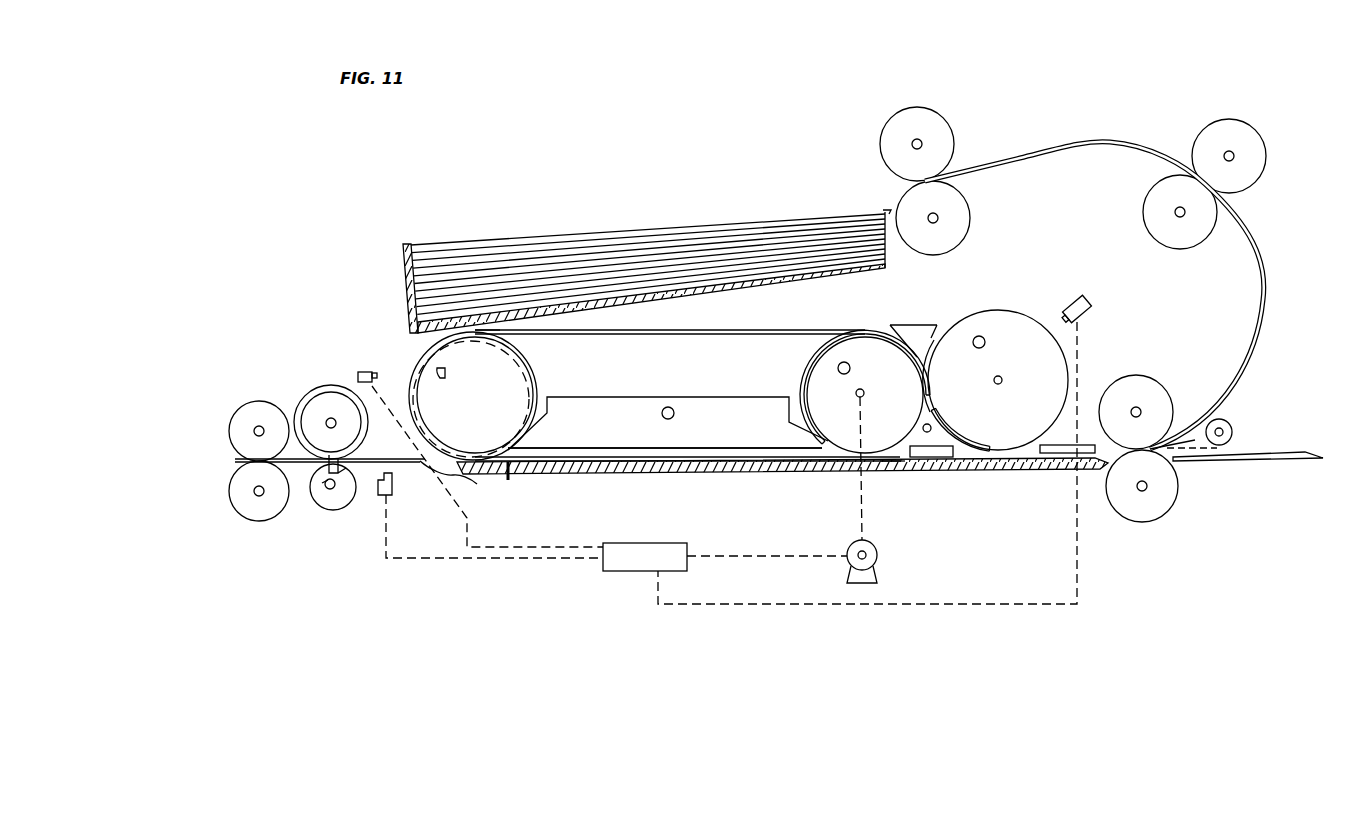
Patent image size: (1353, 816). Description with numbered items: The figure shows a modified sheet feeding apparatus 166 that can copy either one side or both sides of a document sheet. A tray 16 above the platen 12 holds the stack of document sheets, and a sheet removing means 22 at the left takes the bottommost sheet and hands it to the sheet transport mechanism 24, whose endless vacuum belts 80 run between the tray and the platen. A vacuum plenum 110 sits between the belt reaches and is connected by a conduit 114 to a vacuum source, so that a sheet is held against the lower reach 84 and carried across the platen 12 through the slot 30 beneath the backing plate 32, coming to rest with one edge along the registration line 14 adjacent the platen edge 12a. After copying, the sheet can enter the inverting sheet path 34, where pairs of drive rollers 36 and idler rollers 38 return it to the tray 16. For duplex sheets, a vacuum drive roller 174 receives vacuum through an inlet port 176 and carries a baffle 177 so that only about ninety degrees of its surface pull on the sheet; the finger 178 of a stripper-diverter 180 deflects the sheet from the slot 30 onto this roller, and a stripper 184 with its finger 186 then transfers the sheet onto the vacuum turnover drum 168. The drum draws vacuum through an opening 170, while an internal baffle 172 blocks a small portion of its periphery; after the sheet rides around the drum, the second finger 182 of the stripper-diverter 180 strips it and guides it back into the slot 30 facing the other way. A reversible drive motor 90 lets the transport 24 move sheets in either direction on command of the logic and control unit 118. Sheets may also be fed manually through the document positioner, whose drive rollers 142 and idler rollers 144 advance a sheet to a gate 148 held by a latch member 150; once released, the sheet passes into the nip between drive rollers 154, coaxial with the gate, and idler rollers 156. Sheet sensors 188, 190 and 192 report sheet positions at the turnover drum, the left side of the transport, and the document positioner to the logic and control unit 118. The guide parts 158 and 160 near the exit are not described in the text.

The platen 12 is at (700, 471).
The edge of the platen 12a is at (470, 485).
The registration line 14 is at (512, 470).
The tray 16 is at (410, 290).
The sheet removing means 22 is at (506, 331).
The sheet transport mechanism 24 is at (713, 330).
The slot 30 is at (642, 470).
The backing plate 32 is at (1090, 440).
The inverting sheet path 34 is at (1100, 147).
The drive rollers 36 is at (960, 216).
The idler rollers 38 is at (940, 125).
The vacuum belts 80 is at (630, 336).
The lower reach 84 is at (608, 456).
The reversible drive motor 90 is at (877, 553).
The vacuum plenum 110 is at (751, 424).
The conduit 114 is at (672, 418).
The LCU 118 is at (612, 573).
The drive rollers 142 is at (240, 410).
The idler rollers 144 is at (250, 518).
The gate 148 is at (330, 455).
The latch member 150 is at (322, 483).
The drive rollers 154 is at (330, 390).
The idler rollers 156 is at (340, 508).
The exit guide 158 is at (1188, 461).
The exit roller 160 is at (1260, 452).
The sheet feeding apparatus 166 is at (297, 338).
The vacuum turnover drum 168 is at (1000, 311).
The opening 170 is at (985, 343).
The baffle 172 is at (966, 440).
The drive roller 174 is at (802, 362).
The inlet port 176 is at (850, 372).
The baffle 177 is at (803, 384).
The finger 178 is at (901, 458).
The stripper-diverter 180 is at (933, 458).
The second finger 182 is at (958, 458).
The stripper 184 is at (900, 325).
The finger 186 is at (930, 360).
The sheet sensor 188 is at (1096, 300).
The sheet sensor 190 is at (366, 372).
The sheet sensor 192 is at (392, 485).